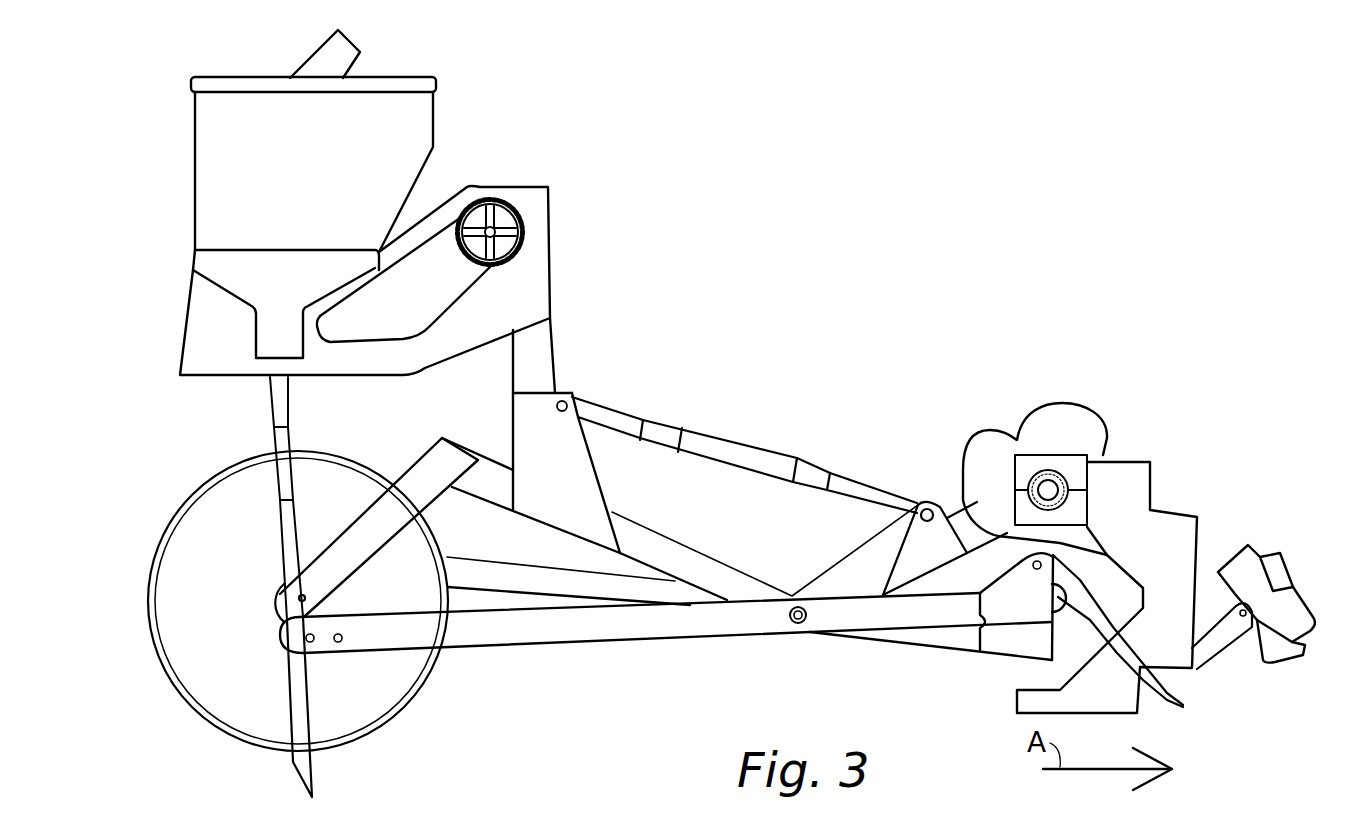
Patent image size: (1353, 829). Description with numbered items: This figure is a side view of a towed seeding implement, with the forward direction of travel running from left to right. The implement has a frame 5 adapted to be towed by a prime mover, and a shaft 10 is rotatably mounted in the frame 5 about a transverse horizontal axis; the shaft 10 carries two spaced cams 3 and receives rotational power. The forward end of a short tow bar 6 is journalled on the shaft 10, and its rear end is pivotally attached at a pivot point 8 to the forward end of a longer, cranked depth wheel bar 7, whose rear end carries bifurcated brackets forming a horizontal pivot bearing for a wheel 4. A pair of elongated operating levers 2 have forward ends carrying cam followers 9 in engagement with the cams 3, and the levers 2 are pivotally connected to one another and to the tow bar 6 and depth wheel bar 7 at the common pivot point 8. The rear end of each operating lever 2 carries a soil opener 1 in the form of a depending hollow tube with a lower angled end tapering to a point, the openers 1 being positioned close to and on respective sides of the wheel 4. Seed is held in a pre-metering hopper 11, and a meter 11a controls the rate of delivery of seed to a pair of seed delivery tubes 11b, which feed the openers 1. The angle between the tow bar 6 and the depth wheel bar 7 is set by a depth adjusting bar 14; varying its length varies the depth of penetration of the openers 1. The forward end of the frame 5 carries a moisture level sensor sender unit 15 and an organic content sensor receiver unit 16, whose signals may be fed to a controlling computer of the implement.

The soil opener 1 is at (318, 713).
The operating lever 2 is at (562, 583).
The cam 3 is at (992, 453).
The wheel 4 is at (210, 543).
The frame 5 is at (1170, 533).
The tow bar 6 is at (846, 585).
The depth wheel bar 7 is at (668, 557).
The pivot point 8 is at (807, 628).
The cam follower 9 is at (1183, 706).
The shaft 10 is at (1050, 488).
The pre-metering hopper 11 is at (407, 130).
The meter 11a is at (230, 335).
The seed delivery tube 11b is at (277, 513).
The depth adjusting bar 14 is at (767, 458).
The moisture level sensor sender unit 15 is at (1250, 572).
The organic content sensor receiver unit 16 is at (1287, 562).